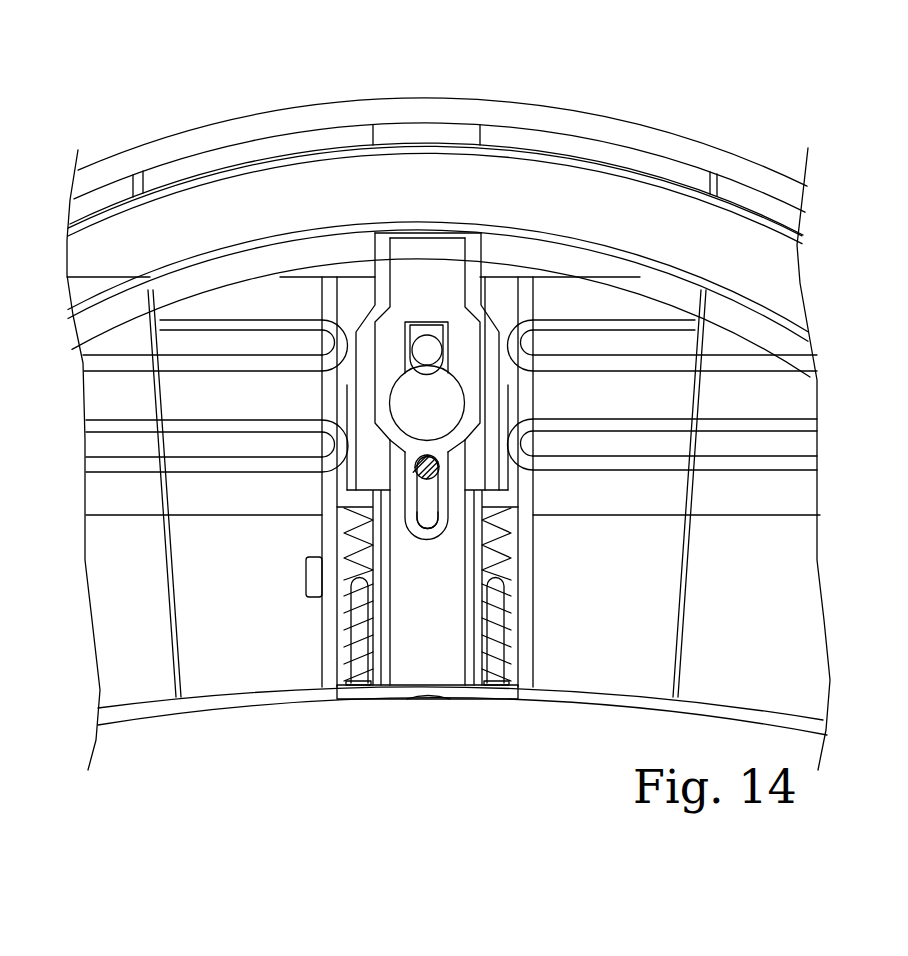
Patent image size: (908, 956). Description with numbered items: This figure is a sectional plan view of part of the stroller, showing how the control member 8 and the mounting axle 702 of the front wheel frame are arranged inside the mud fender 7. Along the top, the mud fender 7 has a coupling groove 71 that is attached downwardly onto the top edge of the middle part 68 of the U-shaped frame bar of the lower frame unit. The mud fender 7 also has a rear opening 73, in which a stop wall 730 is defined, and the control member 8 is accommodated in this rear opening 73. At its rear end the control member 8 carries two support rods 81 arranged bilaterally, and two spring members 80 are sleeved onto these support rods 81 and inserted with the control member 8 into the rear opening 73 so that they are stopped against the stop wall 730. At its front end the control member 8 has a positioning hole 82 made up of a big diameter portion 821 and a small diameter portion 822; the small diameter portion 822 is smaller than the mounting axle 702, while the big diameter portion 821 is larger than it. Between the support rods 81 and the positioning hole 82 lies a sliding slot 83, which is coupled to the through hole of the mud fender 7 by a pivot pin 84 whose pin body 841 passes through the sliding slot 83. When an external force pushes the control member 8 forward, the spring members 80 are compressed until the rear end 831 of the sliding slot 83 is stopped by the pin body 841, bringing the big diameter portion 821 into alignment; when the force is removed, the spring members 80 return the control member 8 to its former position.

The mud fender 7 is at (673, 114).
The coupling groove 71 is at (742, 203).
The middle part 68 is at (778, 222).
The mounting axle 702 is at (427, 346).
The control member 8 is at (366, 714).
The big diameter portion 821 is at (483, 392).
The positioning hole 82 is at (463, 366).
The small diameter portion 822 is at (446, 358).
The sliding slot 83 is at (440, 495).
The rear end 831 is at (428, 532).
The pivot pin 84 is at (428, 456).
The pin body 841 is at (417, 466).
The stop wall 730 is at (346, 491).
The spring members 80 is at (345, 586).
The support rods 81 is at (354, 636).
The rear opening 73 is at (338, 657).